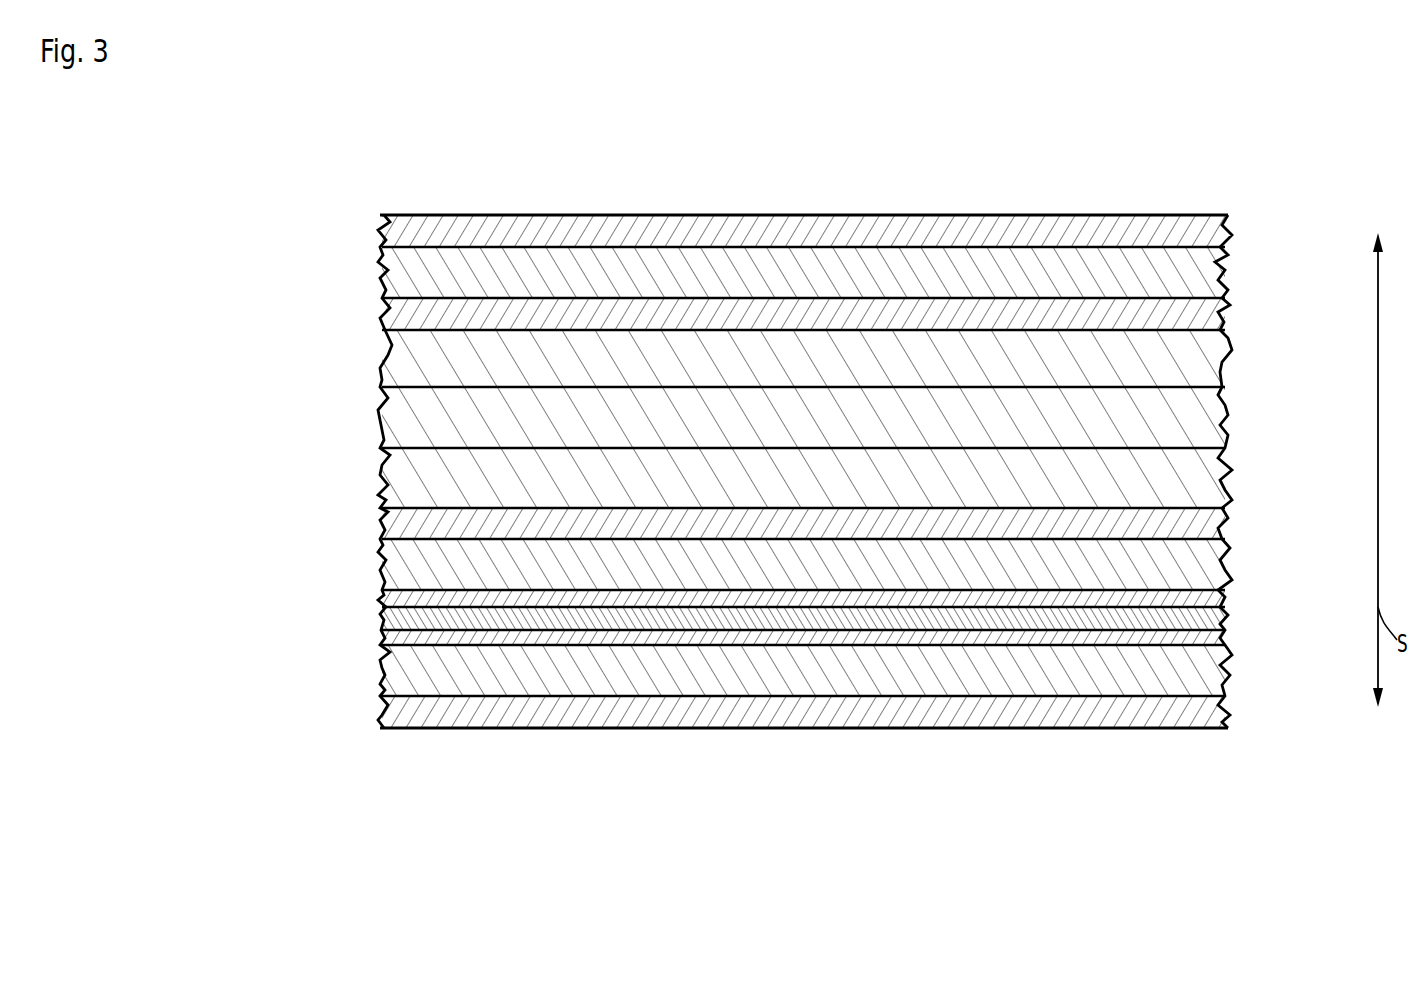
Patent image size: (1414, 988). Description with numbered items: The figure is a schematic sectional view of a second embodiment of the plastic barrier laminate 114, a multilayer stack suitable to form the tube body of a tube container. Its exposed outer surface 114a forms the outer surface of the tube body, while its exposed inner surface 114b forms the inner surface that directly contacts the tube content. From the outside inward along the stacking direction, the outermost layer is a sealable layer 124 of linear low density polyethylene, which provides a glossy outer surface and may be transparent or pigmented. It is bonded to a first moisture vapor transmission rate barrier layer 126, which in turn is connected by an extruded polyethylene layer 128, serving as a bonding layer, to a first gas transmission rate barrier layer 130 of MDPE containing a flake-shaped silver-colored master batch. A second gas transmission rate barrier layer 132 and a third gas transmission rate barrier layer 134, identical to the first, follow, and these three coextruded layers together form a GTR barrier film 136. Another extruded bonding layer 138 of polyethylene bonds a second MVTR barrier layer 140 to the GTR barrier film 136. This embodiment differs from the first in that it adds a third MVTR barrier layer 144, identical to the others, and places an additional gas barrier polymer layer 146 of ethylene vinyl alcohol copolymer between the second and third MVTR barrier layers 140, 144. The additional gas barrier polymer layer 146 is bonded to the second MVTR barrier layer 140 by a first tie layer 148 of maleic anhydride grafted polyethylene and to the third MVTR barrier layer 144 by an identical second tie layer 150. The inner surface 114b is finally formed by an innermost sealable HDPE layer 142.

The plastic barrier laminate 114 is at (296, 134).
The exposed outer surface 114a is at (568, 203).
The exposed inner surface 114b is at (617, 742).
The sealable layer 124 is at (397, 234).
The first moisture vapor transmission rate barrier layer 126 is at (398, 278).
The extruded polyethylene layer 128 is at (400, 314).
The first gas transmission rate barrier layer 130 is at (405, 360).
The second gas transmission rate barrier layer 132 is at (400, 416).
The third gas transmission rate barrier layer 134 is at (400, 483).
The GTR barrier film 136 is at (791, 418).
The extruded bonding layer 138 is at (403, 525).
The second MVTR barrier layer 140 is at (404, 570).
The innermost sealable HDPE layer 142 is at (403, 712).
The third MVTR barrier layer 144 is at (404, 675).
The additional gas barrier polymer layer 146 is at (400, 620).
The first tie layer 148 is at (382, 598).
The second tie layer 150 is at (385, 636).